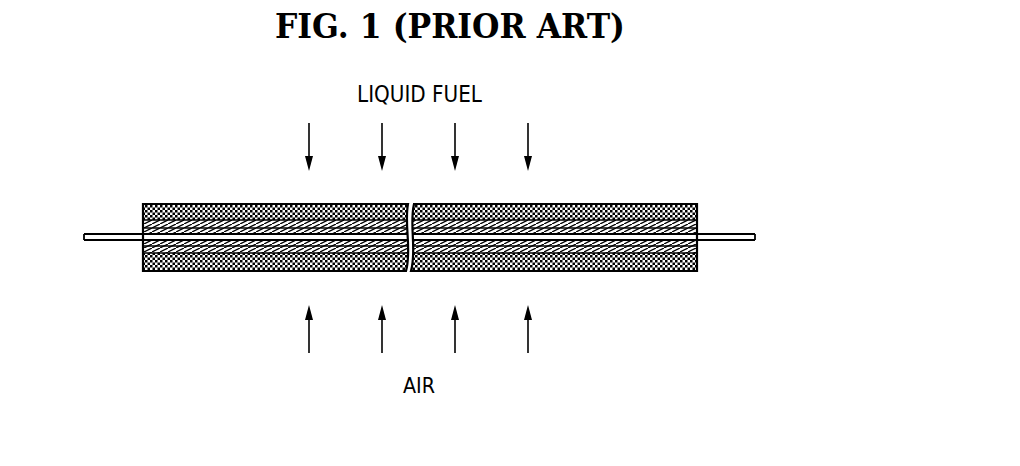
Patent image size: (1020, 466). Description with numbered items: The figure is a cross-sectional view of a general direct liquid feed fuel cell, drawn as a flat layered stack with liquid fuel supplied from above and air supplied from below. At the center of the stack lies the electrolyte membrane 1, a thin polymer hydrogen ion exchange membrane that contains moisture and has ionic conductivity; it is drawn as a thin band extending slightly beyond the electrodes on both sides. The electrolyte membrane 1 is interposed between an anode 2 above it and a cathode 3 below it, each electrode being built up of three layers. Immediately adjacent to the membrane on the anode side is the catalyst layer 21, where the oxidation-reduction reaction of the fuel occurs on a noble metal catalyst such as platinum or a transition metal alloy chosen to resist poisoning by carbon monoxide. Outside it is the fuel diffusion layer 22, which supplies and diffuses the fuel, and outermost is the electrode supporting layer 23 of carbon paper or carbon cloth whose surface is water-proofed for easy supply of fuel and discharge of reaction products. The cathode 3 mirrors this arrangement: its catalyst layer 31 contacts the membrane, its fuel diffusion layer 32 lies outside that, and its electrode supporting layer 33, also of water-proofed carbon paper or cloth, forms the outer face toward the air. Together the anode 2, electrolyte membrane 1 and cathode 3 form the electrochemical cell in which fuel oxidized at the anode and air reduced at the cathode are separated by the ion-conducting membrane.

The electrolyte membrane 1 is at (757, 238).
The anode 2 is at (464, 205).
The catalyst layer 21 is at (447, 225).
The fuel diffusion layer 22 is at (697, 224).
The electrode supporting layer 23 is at (697, 212).
The cathode 3 is at (464, 276).
The catalyst layer 31 is at (697, 243).
The fuel diffusion layer 32 is at (697, 251).
The electrode supporting layer 33 is at (697, 263).